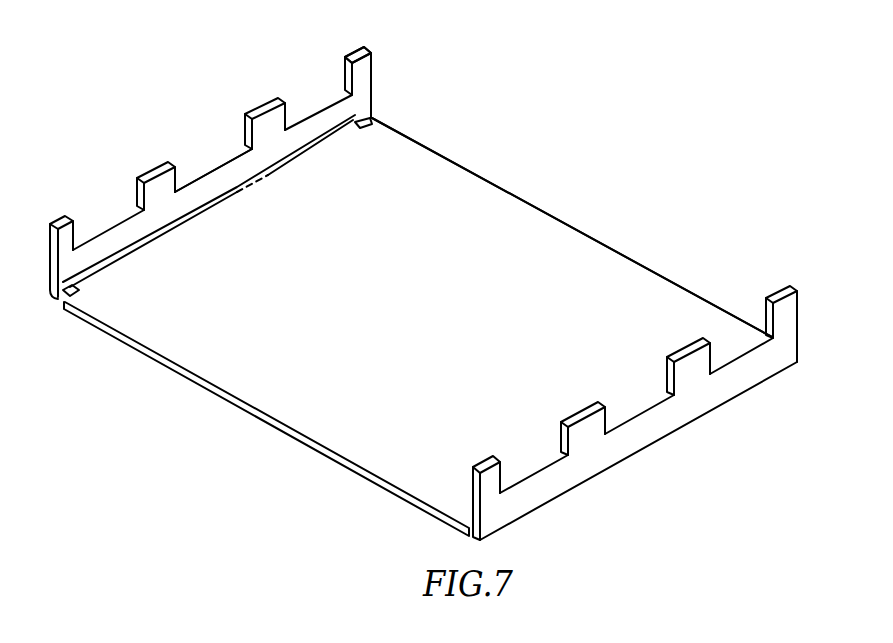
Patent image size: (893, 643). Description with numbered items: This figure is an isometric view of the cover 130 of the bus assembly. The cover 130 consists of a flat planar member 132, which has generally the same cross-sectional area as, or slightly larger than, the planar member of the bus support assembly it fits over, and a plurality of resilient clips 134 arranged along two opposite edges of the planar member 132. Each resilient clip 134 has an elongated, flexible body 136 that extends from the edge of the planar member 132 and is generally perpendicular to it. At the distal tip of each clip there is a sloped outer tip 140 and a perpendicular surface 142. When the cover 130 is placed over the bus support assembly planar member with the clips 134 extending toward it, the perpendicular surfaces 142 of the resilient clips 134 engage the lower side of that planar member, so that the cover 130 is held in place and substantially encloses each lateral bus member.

The cover 130 is at (517, 206).
The planar member 132 is at (177, 167).
The resilient clip 134 is at (284, 128).
The flexible body 136 is at (136, 193).
The sloped outer tip 140 is at (178, 181).
The perpendicular surface 142 is at (374, 58).